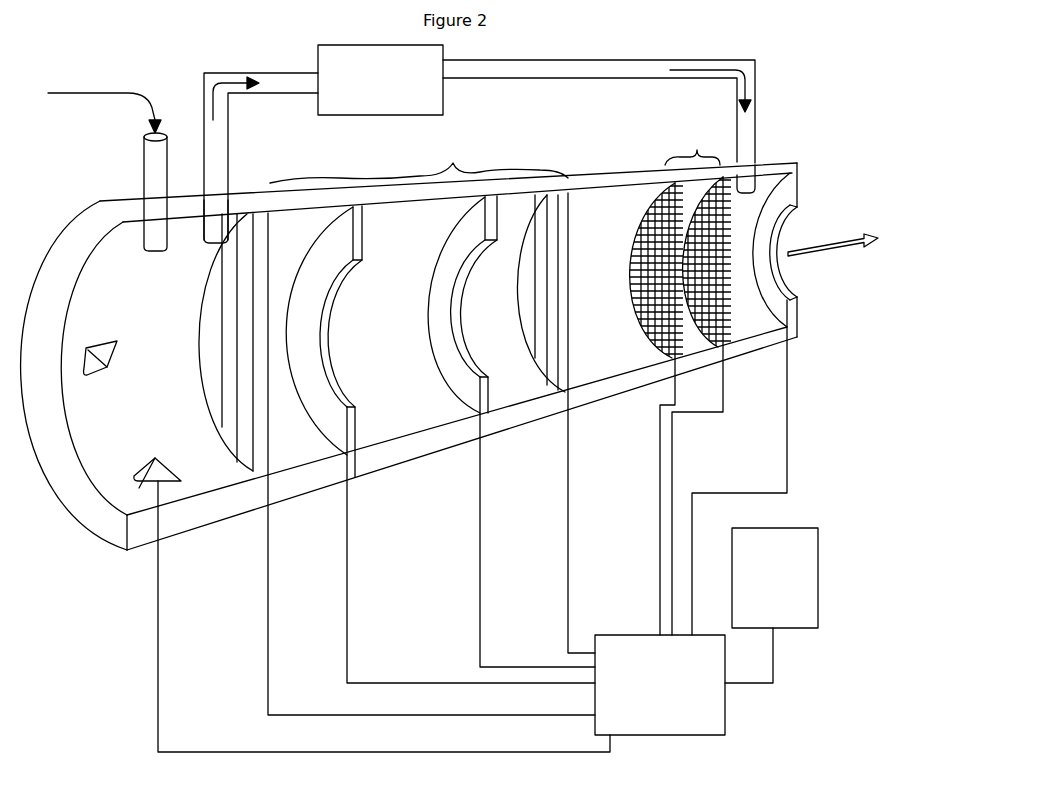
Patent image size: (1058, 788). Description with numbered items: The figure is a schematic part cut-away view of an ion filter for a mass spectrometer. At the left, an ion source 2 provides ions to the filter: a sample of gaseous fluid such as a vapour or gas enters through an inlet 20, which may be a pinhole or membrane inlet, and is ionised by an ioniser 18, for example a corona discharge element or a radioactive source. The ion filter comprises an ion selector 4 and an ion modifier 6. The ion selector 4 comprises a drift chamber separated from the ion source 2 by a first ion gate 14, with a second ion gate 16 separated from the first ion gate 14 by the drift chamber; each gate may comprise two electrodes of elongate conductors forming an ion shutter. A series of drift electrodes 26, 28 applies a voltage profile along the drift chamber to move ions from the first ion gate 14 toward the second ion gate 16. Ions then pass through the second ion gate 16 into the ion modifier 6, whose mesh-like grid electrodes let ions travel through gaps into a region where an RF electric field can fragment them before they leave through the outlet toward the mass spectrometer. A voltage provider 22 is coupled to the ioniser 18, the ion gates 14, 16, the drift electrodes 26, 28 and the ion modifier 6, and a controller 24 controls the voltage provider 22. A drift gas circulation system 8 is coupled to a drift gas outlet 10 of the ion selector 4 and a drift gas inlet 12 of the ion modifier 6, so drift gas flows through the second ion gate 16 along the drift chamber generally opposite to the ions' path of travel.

The ion source 2 is at (98, 190).
The ion selector 4 is at (419, 161).
The ion modifier 6 is at (677, 380).
The drift gas circulation system 8 is at (380, 48).
The drift gas outlet 10 is at (236, 228).
The drift gas inlet 12 is at (757, 186).
The first ion gate 14 is at (265, 459).
The second ion gate 16 is at (572, 373).
The ioniser 18 is at (133, 485).
The inlet 20 is at (164, 172).
The voltage provider 22 is at (684, 681).
The controller 24 is at (775, 578).
The drift electrode 26 is at (355, 445).
The drift electrode 28 is at (487, 400).